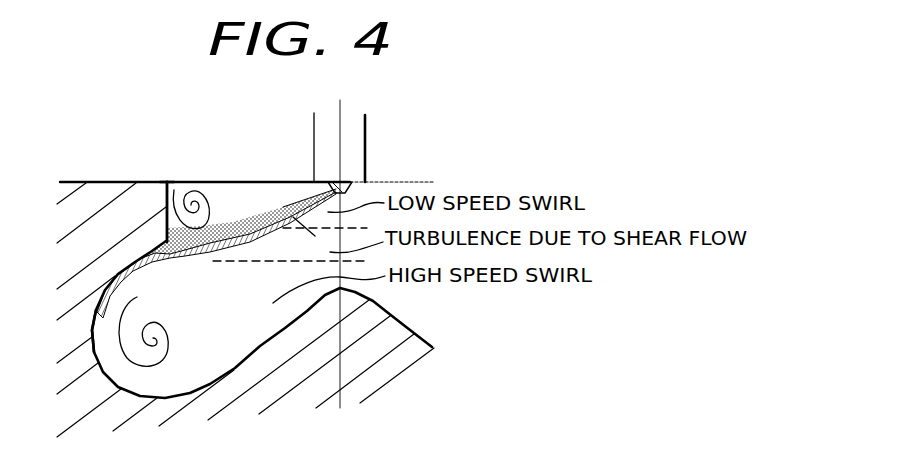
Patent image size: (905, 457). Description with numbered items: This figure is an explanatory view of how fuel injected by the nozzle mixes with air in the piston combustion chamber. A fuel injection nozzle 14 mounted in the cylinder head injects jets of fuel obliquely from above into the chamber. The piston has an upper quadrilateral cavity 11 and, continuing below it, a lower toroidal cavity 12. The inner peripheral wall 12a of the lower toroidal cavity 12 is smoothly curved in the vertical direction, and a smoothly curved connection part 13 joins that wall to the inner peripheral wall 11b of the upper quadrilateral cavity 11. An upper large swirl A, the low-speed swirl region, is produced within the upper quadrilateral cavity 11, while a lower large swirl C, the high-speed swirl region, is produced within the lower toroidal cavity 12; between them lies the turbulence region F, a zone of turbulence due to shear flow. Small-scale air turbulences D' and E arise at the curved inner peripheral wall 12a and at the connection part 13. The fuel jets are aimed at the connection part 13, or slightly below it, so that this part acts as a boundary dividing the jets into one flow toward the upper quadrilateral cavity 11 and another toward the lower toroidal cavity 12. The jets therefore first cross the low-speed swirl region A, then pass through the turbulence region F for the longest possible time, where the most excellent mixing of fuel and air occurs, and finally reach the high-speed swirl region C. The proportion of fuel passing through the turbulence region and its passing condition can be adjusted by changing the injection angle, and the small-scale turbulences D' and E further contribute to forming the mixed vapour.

The upper quadrilateral cavity 11 is at (181, 193).
The inner peripheral wall of the upper quadrilateral cavity 11b is at (174, 186).
The lower toroidal cavity 12 is at (144, 397).
The inner peripheral wall of the lower toroidal cavity 12a is at (95, 342).
The connection part 13 is at (165, 238).
The fuel injection nozzle 14 is at (354, 150).
The upper large swirl A is at (253, 190).
The lower large swirl C is at (233, 337).
The air turbulence D' is at (166, 331).
The air turbulence E is at (202, 203).
The turbulence region F is at (268, 243).